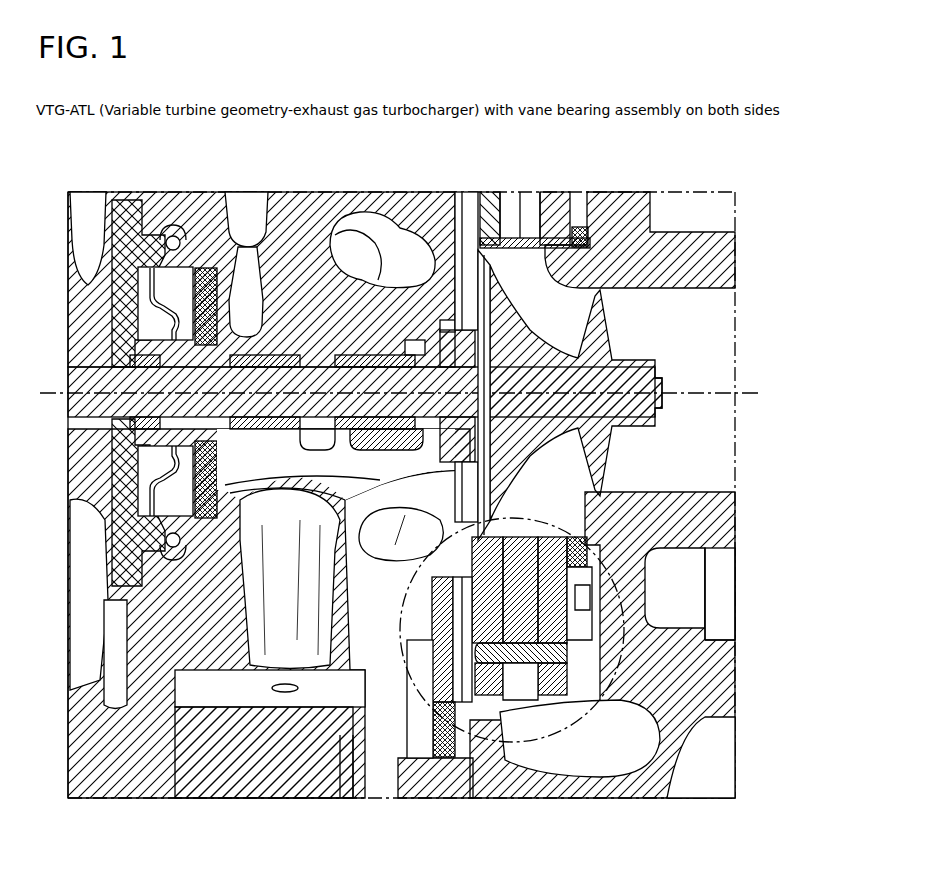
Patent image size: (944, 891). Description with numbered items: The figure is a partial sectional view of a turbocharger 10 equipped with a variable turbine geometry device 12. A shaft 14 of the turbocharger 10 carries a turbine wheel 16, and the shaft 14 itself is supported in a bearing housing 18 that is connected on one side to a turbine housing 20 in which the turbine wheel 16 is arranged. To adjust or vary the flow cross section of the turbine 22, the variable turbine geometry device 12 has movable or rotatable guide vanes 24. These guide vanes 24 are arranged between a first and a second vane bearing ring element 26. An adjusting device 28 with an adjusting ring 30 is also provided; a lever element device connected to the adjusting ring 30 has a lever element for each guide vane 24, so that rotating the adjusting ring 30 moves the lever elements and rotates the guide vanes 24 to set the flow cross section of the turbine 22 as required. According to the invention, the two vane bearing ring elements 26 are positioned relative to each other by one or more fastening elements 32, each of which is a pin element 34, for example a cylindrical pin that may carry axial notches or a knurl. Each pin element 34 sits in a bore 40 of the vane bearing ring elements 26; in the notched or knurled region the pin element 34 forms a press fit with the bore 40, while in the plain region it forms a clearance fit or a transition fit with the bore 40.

The turbocharger 10 is at (755, 245).
The variable turbine geometry device 12 is at (633, 578).
The shaft 14 is at (320, 430).
The turbine wheel 16 is at (522, 318).
The bearing housing 18 is at (288, 190).
The turbine housing 20 is at (639, 495).
The turbine 22 is at (748, 602).
The guide vane 24 is at (520, 537).
The vane bearing ring element 26 is at (430, 628).
The adjusting device 28 is at (435, 785).
The adjusting ring 30 is at (450, 765).
The fastening element 32 is at (522, 695).
The pin element 34 is at (592, 668).
The bore 40 is at (555, 695).